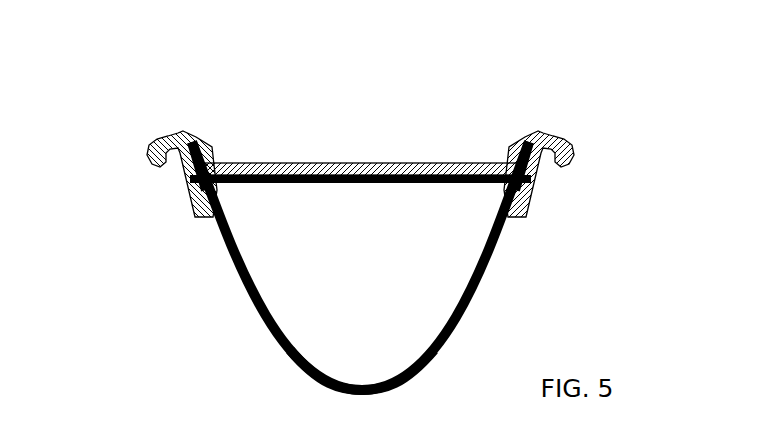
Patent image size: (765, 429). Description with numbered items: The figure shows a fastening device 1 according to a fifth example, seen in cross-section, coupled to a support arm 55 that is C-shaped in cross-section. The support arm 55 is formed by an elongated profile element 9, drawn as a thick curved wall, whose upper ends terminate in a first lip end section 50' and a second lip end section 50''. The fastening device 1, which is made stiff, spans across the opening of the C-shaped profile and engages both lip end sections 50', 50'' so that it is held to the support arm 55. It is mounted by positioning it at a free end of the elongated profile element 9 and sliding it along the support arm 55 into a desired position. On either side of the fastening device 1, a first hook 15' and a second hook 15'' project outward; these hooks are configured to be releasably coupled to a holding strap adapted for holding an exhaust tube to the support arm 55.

The fastening device 1 is at (404, 130).
The first hook 15' is at (133, 150).
The second hook 15'' is at (590, 144).
The first lip end section 50' is at (138, 177).
The second lip end section 50'' is at (564, 202).
The support arm 55 is at (516, 268).
The elongated profile element 9 is at (278, 345).